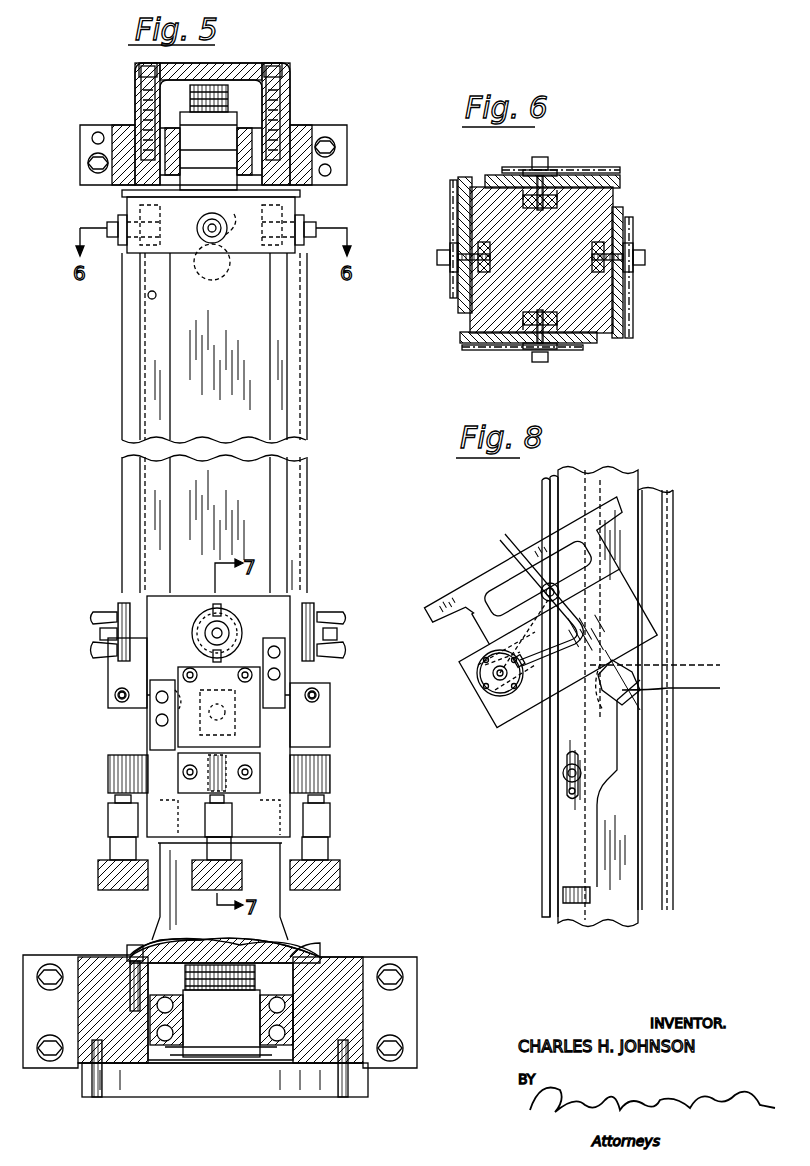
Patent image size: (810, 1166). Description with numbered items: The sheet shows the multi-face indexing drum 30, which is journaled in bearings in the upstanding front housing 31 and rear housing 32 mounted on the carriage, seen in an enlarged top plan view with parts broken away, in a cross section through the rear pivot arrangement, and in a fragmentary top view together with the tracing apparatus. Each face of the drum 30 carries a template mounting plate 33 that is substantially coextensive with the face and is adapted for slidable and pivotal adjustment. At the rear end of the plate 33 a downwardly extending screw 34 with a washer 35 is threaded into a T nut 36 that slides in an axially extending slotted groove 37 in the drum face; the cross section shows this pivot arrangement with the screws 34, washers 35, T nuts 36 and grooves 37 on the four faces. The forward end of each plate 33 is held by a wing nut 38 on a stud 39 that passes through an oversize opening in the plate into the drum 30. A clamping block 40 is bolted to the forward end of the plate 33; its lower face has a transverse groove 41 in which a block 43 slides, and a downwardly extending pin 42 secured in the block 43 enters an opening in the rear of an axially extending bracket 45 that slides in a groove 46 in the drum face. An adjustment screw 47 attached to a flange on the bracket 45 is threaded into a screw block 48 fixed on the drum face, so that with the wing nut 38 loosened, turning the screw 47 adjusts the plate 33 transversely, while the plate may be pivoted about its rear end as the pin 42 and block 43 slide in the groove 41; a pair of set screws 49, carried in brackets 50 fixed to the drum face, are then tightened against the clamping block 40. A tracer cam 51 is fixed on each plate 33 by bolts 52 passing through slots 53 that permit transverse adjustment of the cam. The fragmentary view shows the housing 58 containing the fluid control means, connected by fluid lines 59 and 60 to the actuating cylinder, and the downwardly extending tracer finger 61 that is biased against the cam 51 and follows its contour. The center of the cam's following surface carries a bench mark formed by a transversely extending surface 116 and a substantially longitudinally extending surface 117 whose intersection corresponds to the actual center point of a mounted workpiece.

In FIG. 5, the indexing drum 30 is at (285, 376).
In FIG. 6, the indexing drum 30 is at (600, 332).
In FIG. 8, the indexing drum 30 is at (650, 923).
In FIG. 5, the front housing 31 is at (337, 955).
In FIG. 5, the rear housing 32 is at (298, 122).
In FIG. 5, the template mounting plate 33 is at (265, 336).
In FIG. 6, the template mounting plate 33 is at (620, 181).
In FIG. 8, the template mounting plate 33 is at (655, 470).
In FIG. 5, the screw 34 is at (197, 224).
In FIG. 6, the screw 34 is at (532, 160).
In FIG. 5, the washer 35 is at (225, 240).
In FIG. 6, the washer 35 is at (550, 170).
In FIG. 5, the T nut 36 is at (195, 228).
In FIG. 6, the T nut 36 is at (552, 208).
In FIG. 5, the slotted groove 37 is at (225, 220).
In FIG. 6, the slotted groove 37 is at (522, 205).
In FIG. 5, the wing nut 38 is at (96, 614).
In FIG. 5, the stud 39 is at (212, 620).
In FIG. 5, the clamping block 40 is at (190, 668).
In FIG. 5, the groove 41 is at (250, 736).
In FIG. 5, the pin 42 is at (82, 712).
In FIG. 5, the block 43 is at (82, 730).
In FIG. 5, the bracket 45 is at (200, 812).
In FIG. 5, the groove 46 is at (173, 850).
In FIG. 5, the adjustment screw 47 is at (120, 890).
In FIG. 5, the screw block 48 is at (108, 789).
In FIG. 5, the set screws 49 is at (147, 688).
In FIG. 5, the brackets 50 is at (108, 668).
In FIG. 6, the cam 51 is at (592, 160).
In FIG. 8, the cam 51 is at (607, 780).
In FIG. 8, the bolts 52 is at (563, 773).
In FIG. 8, the slots 53 is at (568, 791).
In FIG. 8, the housing 58 is at (640, 600).
In FIG. 8, the fluid line 59 is at (516, 548).
In FIG. 8, the fluid line 60 is at (545, 585).
In FIG. 8, the tracer finger 61 is at (617, 691).
In FIG. 8, the transversely extending surface 116 is at (672, 665).
In FIG. 8, the longitudinally extending surface 117 is at (688, 688).